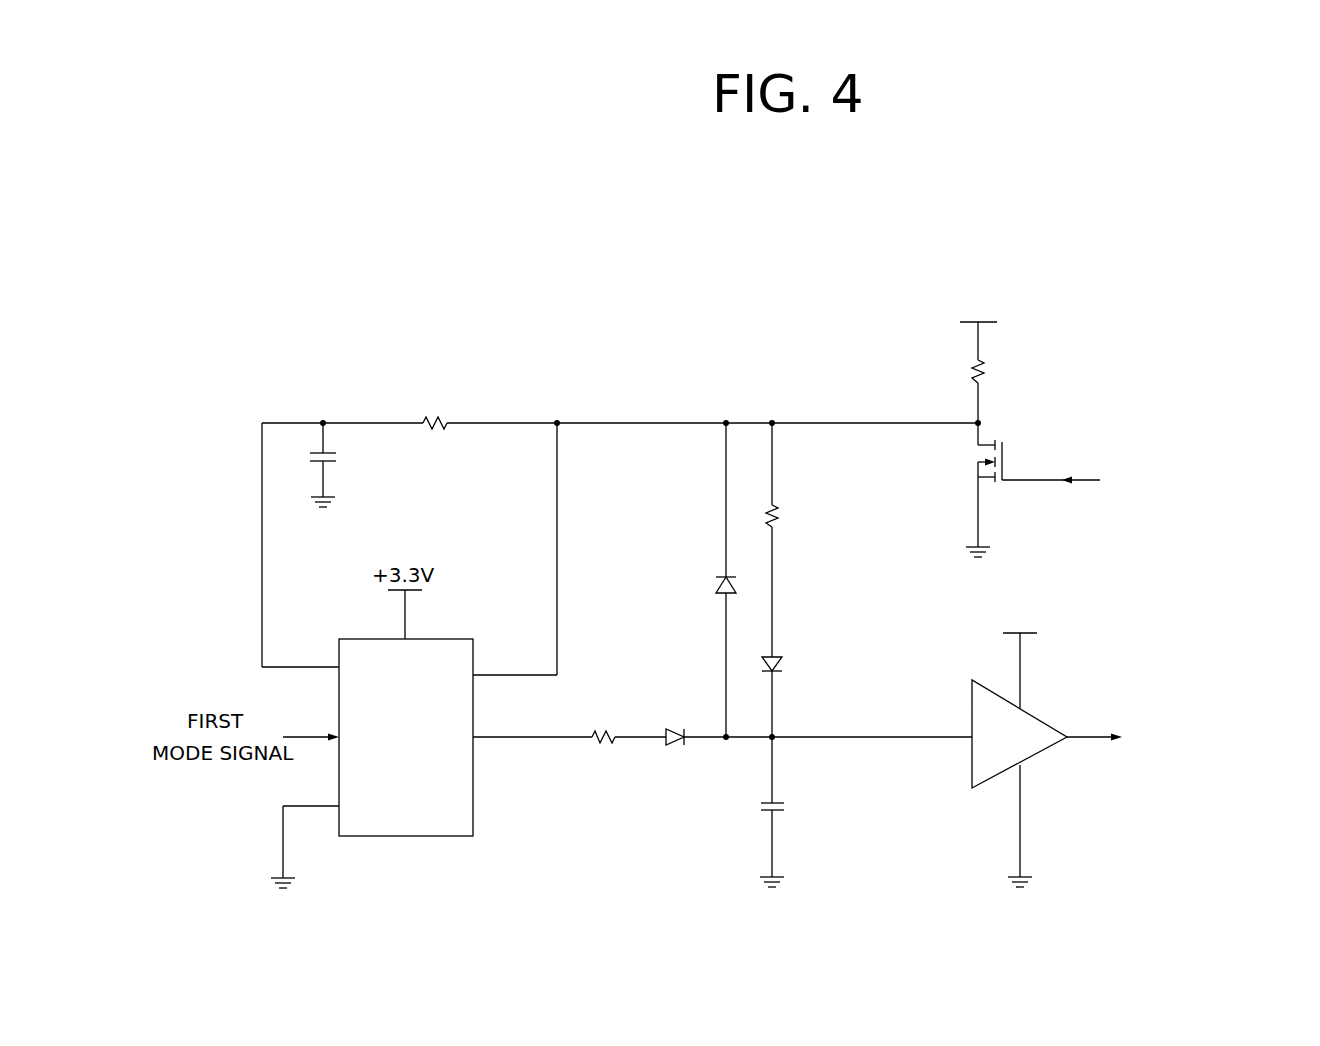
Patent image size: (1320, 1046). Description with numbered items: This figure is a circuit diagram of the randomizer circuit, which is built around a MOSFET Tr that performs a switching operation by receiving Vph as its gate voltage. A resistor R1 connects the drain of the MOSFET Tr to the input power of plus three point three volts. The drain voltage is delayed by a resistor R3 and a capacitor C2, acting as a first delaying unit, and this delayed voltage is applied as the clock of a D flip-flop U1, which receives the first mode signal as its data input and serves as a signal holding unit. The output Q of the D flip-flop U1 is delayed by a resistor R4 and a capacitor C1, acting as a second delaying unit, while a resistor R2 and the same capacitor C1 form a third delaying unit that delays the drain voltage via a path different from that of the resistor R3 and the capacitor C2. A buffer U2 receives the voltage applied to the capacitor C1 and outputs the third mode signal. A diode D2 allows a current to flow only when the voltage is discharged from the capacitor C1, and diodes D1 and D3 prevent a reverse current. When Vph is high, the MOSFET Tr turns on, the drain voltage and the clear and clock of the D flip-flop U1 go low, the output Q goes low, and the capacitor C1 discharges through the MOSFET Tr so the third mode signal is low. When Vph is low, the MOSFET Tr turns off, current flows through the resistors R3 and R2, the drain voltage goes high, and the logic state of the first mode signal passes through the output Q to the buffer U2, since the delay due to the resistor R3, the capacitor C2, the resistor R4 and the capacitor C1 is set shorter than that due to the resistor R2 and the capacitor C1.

The resistor R1 is at (979, 358).
The resistor R2 is at (786, 540).
The resistor R3 is at (435, 410).
The resistor R4 is at (604, 724).
The capacitor C1 is at (787, 812).
The capacitor C2 is at (336, 465).
The diode D1 is at (787, 695).
The diode D2 is at (713, 580).
The diode D3 is at (676, 724).
The D flip-flop U1 is at (430, 737).
The buffer U2 is at (1121, 746).
The MOSFET Tr is at (1054, 490).